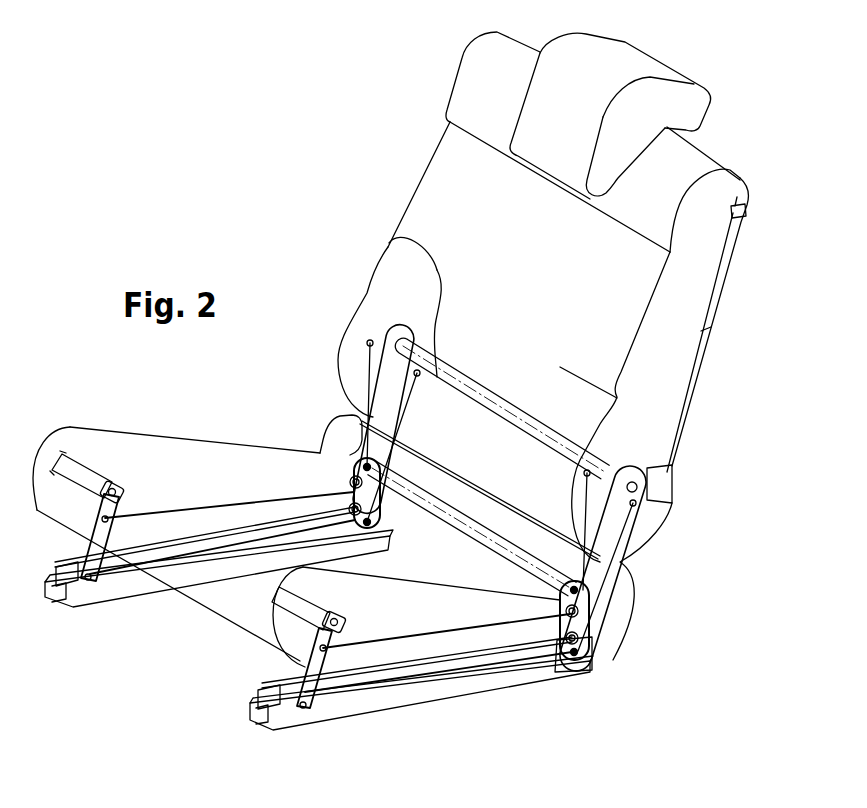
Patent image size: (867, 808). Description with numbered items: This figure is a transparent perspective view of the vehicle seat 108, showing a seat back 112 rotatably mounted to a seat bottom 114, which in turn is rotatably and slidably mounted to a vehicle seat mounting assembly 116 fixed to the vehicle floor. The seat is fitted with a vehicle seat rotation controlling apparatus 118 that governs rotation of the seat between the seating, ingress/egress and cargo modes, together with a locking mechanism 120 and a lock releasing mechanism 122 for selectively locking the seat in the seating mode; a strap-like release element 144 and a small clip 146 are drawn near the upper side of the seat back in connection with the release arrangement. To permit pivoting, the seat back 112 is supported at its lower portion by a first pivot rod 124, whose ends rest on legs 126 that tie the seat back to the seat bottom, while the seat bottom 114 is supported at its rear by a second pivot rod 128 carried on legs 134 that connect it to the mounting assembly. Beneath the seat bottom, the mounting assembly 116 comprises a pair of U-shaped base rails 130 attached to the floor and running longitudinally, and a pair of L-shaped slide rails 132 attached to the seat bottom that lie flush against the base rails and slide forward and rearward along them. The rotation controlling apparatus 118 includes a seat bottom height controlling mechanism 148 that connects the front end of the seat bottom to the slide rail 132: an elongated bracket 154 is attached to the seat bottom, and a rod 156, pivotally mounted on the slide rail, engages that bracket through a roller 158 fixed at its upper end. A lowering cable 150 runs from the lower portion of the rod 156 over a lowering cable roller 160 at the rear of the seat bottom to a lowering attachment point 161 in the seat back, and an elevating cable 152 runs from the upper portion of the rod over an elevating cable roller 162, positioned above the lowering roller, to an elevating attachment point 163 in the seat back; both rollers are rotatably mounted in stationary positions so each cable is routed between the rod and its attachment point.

The seat 108 is at (268, 129).
The seat back 112 is at (440, 170).
The seat bottom 114 is at (197, 453).
The vehicle seat mounting assembly 116 is at (240, 730).
The vehicle seat rotation controlling apparatus 118 is at (362, 732).
The locking mechanism 120 is at (690, 486).
The lock releasing mechanism 122 is at (757, 214).
The first pivot rod 124 is at (393, 234).
The legs 126 is at (400, 338).
The second pivot rod 128 is at (500, 546).
The U-shaped base rails 130 is at (78, 610).
The L-shaped slide rails 132 is at (63, 571).
The legs 134 is at (340, 422).
The release strap 144 is at (715, 337).
The strap clip 146 is at (741, 206).
The seat bottom height controlling mechanism 148 is at (45, 420).
The lowering cable 150 is at (102, 580).
The elevating cable 152 is at (223, 507).
The elongated bracket 154 is at (84, 473).
The rod 156 is at (97, 527).
The roller 158 is at (104, 483).
The lowering cable roller 160 is at (385, 507).
The lowering attachment point 161 is at (638, 478).
The elevating cable roller 162 is at (351, 484).
The elevating attachment point 163 is at (577, 469).